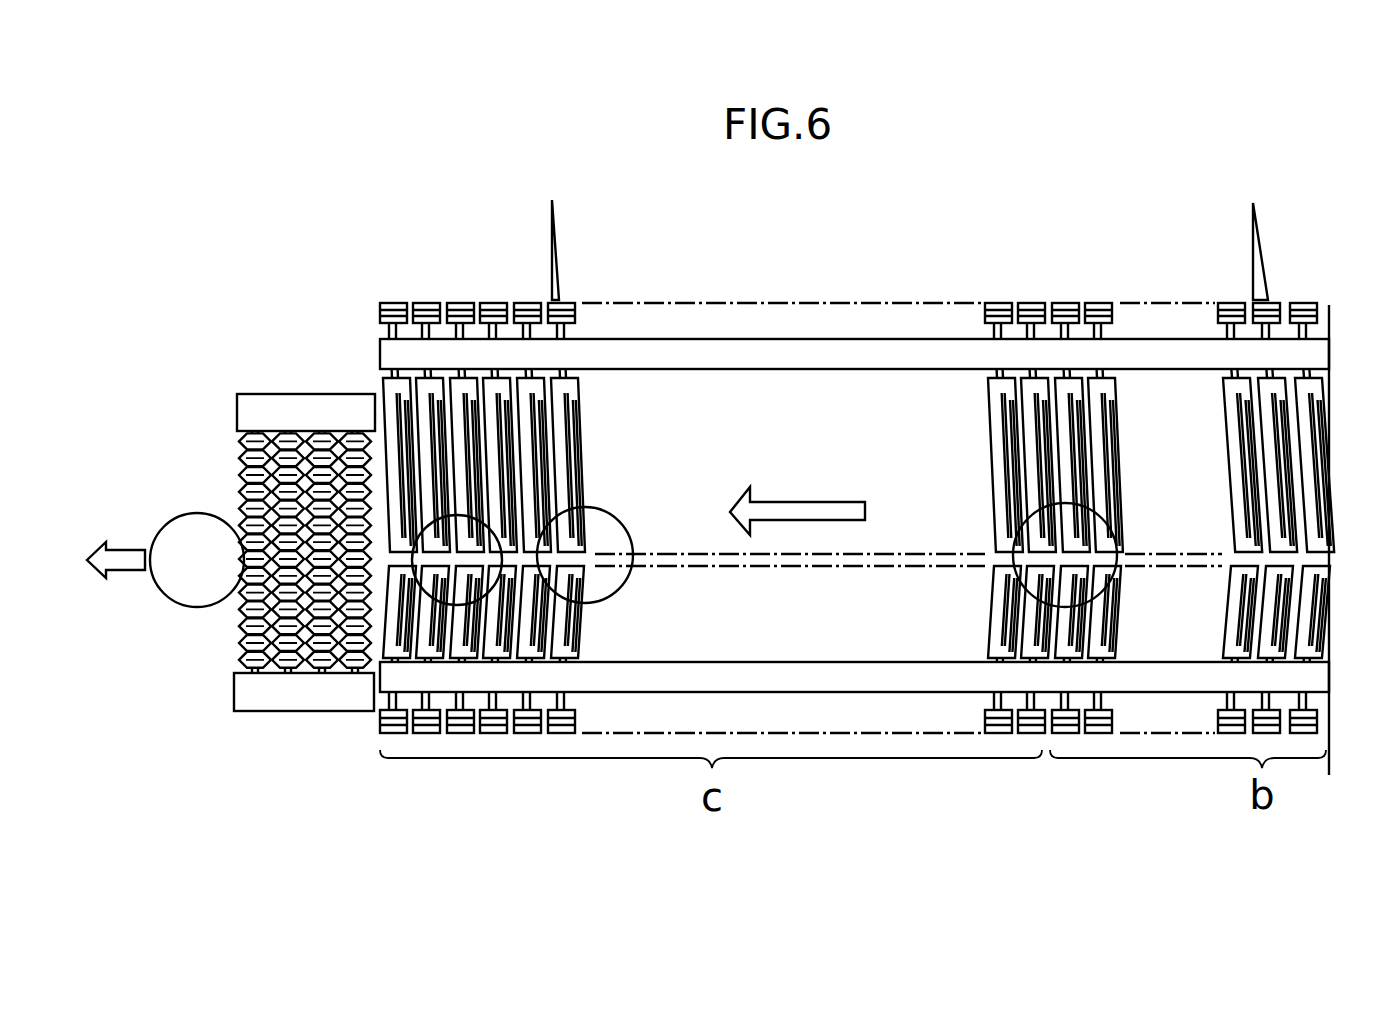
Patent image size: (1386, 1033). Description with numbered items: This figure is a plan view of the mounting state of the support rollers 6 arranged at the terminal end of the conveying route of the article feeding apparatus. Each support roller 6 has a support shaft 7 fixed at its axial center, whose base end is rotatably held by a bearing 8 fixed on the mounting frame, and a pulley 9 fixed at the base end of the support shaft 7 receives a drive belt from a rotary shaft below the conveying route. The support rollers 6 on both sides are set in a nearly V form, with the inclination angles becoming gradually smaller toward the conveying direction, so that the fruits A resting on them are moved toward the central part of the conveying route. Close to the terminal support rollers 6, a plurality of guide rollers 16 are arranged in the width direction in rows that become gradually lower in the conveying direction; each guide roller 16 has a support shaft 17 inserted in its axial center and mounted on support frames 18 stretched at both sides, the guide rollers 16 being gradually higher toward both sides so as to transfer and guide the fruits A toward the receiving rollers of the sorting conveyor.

The support roller 6 is at (473, 486).
The support shaft 7 is at (1313, 330).
The bearing 8 is at (806, 372).
The pulley 9 is at (1305, 300).
The guide roller 16 is at (237, 560).
The support shaft 17 is at (353, 668).
The support frame 18 is at (272, 395).
The fruit A is at (200, 513).